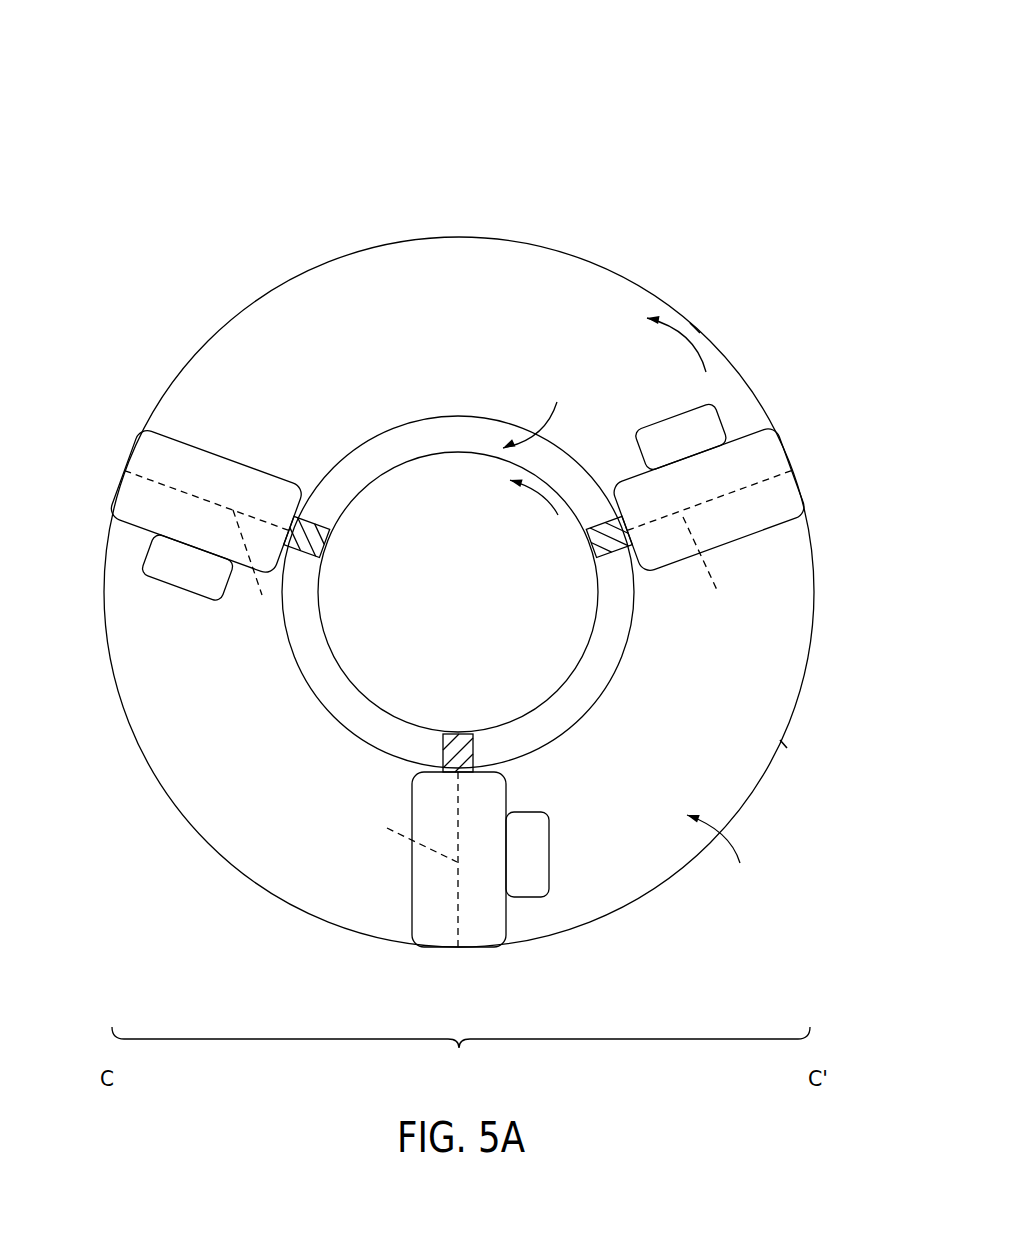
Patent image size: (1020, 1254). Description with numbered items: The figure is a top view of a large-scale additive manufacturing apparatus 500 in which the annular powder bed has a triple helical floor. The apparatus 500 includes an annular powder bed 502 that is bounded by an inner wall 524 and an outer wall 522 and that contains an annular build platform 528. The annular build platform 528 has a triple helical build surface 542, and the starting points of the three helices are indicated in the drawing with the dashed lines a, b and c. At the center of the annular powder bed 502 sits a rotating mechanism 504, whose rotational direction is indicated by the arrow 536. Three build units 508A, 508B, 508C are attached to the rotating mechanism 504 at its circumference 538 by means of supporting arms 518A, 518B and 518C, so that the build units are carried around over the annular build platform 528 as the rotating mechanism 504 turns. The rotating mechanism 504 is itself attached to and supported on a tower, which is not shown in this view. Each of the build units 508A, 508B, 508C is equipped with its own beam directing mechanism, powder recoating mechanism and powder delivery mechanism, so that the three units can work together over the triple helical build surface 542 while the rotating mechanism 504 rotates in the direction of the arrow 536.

The large-scale additive manufacturing apparatus 500 is at (778, 91).
The annular powder bed 502 is at (567, 252).
The rotating mechanism 504 is at (473, 603).
The build unit 508A is at (790, 493).
The build unit 508B is at (482, 930).
The build unit 508C is at (138, 500).
The supporting arm 518A is at (592, 548).
The supporting arm 518B is at (457, 740).
The supporting arm 518C is at (323, 545).
The outer wall 522 is at (690, 323).
The inner wall 524 is at (465, 415).
The annular build platform 528 is at (757, 735).
The arrow indicating rotational direction 536 is at (680, 342).
The circumference 538 is at (536, 410).
The triple helical build surface 542 is at (722, 855).